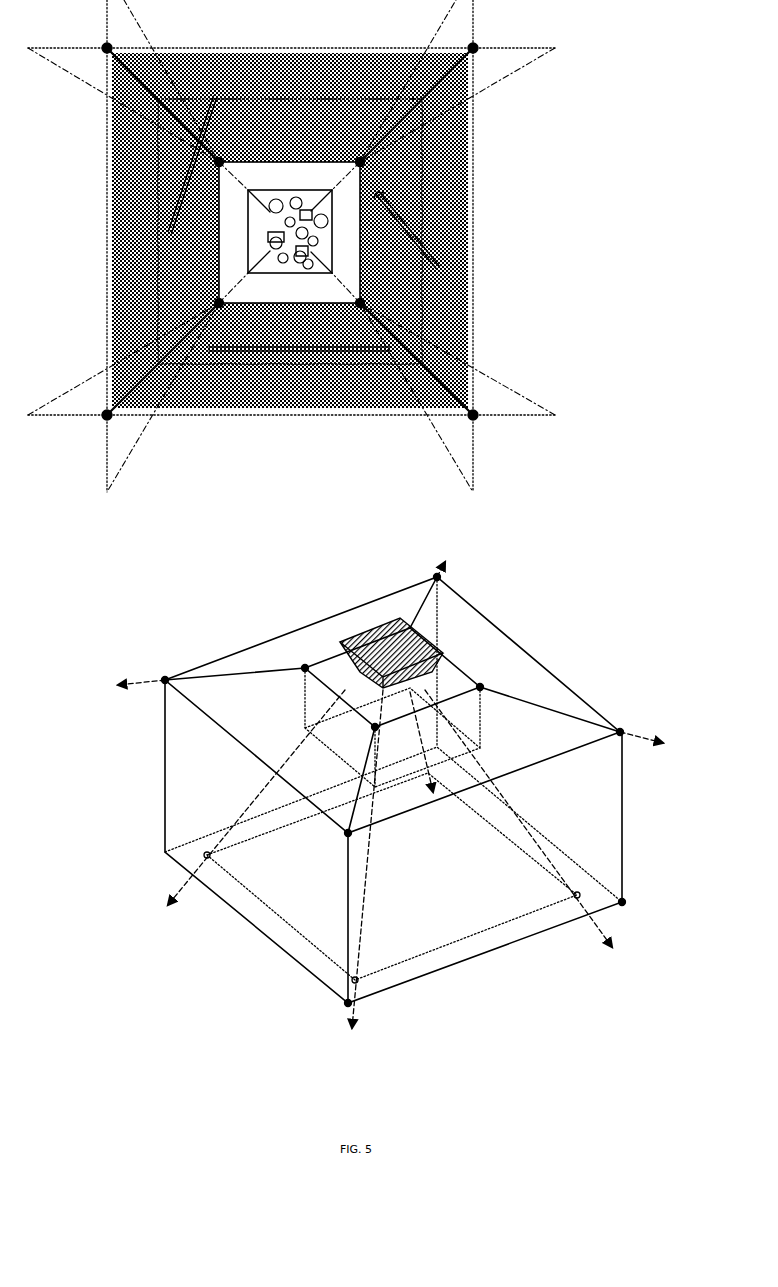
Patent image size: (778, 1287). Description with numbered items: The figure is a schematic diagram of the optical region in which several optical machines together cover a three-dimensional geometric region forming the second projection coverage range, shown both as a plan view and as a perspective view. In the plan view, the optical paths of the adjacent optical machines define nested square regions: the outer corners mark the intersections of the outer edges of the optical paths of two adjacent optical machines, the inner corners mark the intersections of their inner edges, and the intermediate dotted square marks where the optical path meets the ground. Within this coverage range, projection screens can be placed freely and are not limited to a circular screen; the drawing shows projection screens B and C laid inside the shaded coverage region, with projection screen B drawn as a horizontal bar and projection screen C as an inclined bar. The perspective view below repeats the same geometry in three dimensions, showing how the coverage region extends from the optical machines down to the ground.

The projection screen B is at (300, 341).
The projection screen C is at (409, 230).